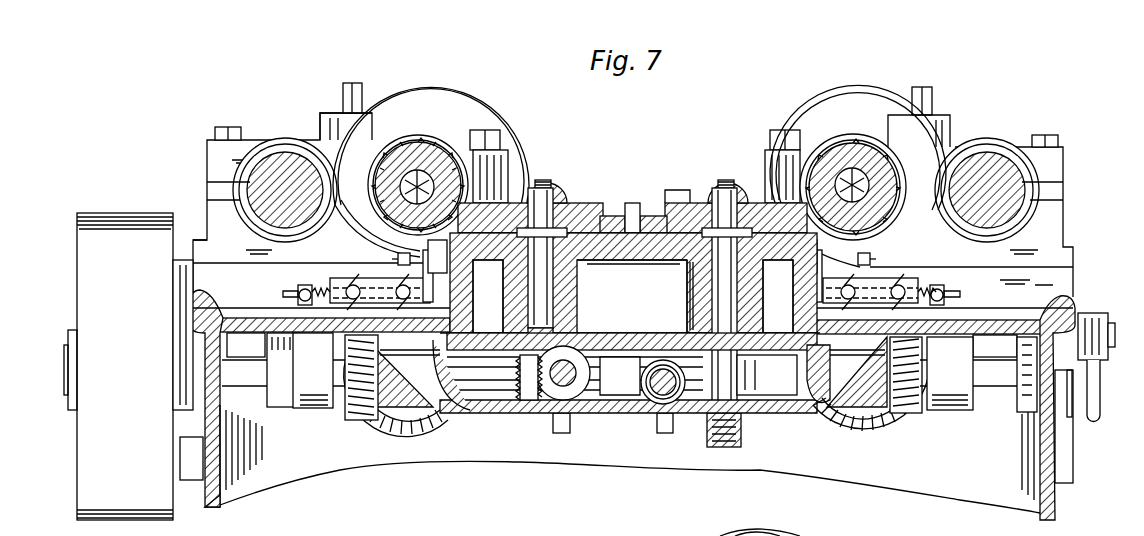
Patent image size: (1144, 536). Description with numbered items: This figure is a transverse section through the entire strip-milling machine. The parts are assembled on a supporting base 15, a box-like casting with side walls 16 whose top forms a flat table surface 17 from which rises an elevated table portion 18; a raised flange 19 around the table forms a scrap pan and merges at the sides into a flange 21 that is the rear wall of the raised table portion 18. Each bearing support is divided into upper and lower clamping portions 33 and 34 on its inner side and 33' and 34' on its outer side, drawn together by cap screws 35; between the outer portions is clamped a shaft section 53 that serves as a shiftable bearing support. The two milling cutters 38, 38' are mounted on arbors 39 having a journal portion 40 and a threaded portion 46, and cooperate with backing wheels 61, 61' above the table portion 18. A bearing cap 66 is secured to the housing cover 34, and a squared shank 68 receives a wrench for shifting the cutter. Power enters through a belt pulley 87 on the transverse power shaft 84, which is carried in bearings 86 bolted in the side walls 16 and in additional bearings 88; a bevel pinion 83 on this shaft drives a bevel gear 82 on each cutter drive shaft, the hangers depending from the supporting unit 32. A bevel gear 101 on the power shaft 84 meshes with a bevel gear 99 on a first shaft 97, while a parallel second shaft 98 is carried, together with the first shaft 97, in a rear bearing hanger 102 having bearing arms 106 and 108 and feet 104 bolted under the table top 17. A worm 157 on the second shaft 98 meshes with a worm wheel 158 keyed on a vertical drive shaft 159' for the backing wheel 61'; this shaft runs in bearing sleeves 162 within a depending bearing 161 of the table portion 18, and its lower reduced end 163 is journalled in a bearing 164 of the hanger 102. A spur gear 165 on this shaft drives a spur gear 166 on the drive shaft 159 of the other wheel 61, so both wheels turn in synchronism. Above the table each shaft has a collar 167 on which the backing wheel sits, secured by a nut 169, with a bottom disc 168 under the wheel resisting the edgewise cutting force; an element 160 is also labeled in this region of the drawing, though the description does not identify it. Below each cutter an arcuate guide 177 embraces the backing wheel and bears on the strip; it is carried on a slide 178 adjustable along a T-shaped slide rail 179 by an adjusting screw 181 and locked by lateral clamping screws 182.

The supporting base 15 is at (207, 508).
The side walls 16 is at (235, 497).
The flat table surface 17 is at (246, 320).
The elevated table portion 18 is at (630, 230).
The raised flange 19 is at (205, 294).
The flange 21 is at (193, 277).
The supporting unit 32 is at (438, 78).
The upper clamping portion 33 is at (637, 150).
The upper clamping portion 33' is at (626, 181).
The lower clamping portion 34 is at (625, 159).
The lower clamping portion 34' is at (637, 204).
The cap screws 35 is at (243, 127).
The milling cutter 38 is at (443, 154).
The milling cutter 38' is at (853, 146).
The arbor 39 is at (417, 180).
The journal portion 40 is at (1095, 404).
The threaded portion 46 is at (883, 528).
The shaft section 53 is at (247, 172).
The backing wheel 61 is at (541, 204).
The backing wheel 61' is at (723, 205).
The bearing cap 66 is at (344, 114).
The squared shank 68 is at (343, 90).
The bevel gear 82 is at (423, 432).
The bevel pinion 83 is at (343, 412).
The transverse power shaft 84 is at (393, 410).
The bearings 86 is at (190, 396).
The belt pulley 87 is at (77, 294).
The bearings 88 is at (311, 408).
The first shaft 97 is at (562, 378).
The second shaft 98 is at (638, 375).
The bevel gear 99 is at (630, 319).
The bevel gear 101 is at (526, 400).
The rear bearing hanger 102 is at (665, 390).
The feet 104 is at (380, 385).
The bearing arm 106 is at (585, 405).
The bearing arm 108 is at (632, 400).
The worm 157 is at (665, 415).
The worm wheel 158 is at (750, 380).
The drive shaft 159 is at (633, 283).
The vertical drive shaft 159' is at (674, 296).
The plate 160 is at (645, 203).
The depending bearing 161 is at (690, 289).
The bearing sleeves 162 is at (572, 283).
The lower reduced end 163 is at (726, 447).
The bearing 164 is at (675, 415).
The spur gear 165 is at (672, 345).
The spur gear 166 is at (645, 329).
The collar 167 is at (703, 200).
The bottom disc 168 is at (632, 271).
The nut 169 is at (566, 198).
The guide 177 is at (400, 254).
The slide 178 is at (373, 280).
The T-shaped slide rail 179 is at (633, 312).
The adjusting screw 181 is at (310, 288).
The lateral clamping screws 182 is at (358, 278).